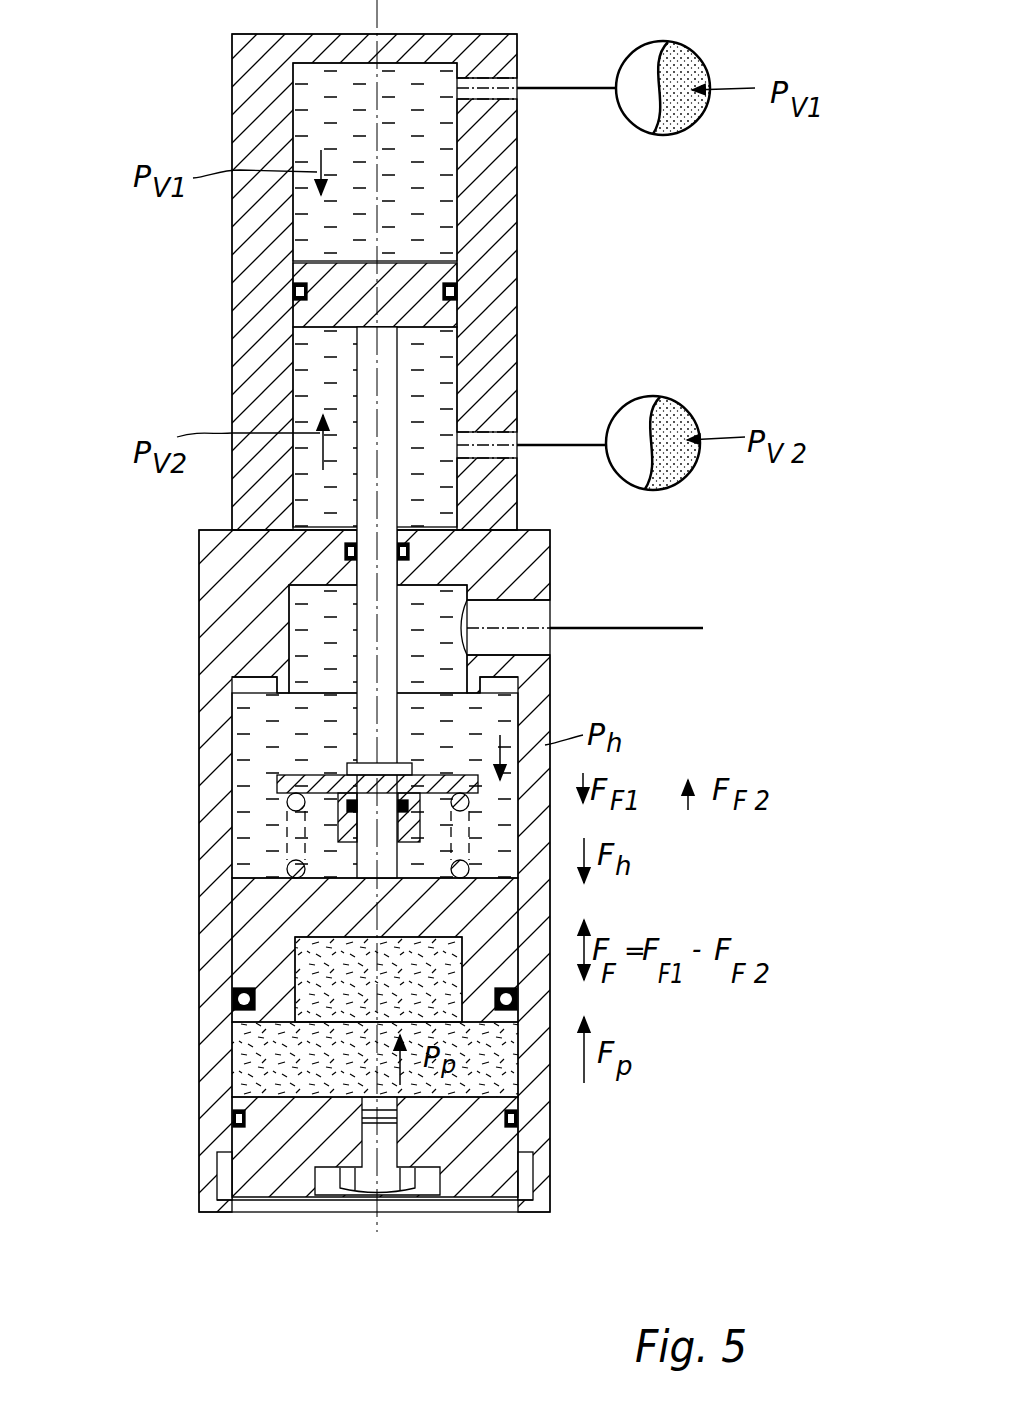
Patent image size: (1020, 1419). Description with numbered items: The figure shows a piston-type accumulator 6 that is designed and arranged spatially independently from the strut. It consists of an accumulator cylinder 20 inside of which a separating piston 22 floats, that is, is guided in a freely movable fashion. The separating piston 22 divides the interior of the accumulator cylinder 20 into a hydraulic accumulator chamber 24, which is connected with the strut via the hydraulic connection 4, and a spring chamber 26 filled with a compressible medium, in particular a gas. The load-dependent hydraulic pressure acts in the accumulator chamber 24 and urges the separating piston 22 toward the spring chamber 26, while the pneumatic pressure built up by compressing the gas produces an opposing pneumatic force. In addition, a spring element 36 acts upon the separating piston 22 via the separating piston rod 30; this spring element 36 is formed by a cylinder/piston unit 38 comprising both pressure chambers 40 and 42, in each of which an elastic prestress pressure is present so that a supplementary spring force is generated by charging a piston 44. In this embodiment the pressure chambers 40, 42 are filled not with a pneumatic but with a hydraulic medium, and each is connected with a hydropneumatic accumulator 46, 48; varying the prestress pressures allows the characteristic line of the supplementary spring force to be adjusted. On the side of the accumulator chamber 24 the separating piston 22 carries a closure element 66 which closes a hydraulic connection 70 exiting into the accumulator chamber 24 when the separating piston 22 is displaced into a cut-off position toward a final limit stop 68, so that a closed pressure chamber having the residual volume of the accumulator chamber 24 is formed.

The hydraulic connection 4 is at (673, 628).
The piston-type accumulator 6 is at (168, 1041).
The accumulator cylinder 20 is at (217, 822).
The separating piston 22 is at (260, 930).
The hydraulic accumulator chamber 24 is at (297, 777).
The spring chamber 26 is at (255, 1068).
The separating piston rod 30 is at (370, 620).
The spring element 36 is at (534, 289).
The cylinder/piston unit 38 is at (248, 296).
The pressure chamber 40 is at (440, 174).
The pressure chamber 42 is at (440, 374).
The piston 44 is at (293, 317).
The hydropneumatic accumulator 46 is at (670, 45).
The hydropneumatic accumulator 48 is at (668, 400).
The closure element 66 is at (303, 766).
The final limit stop 68 is at (545, 685).
The hydraulic connection 70 is at (550, 612).